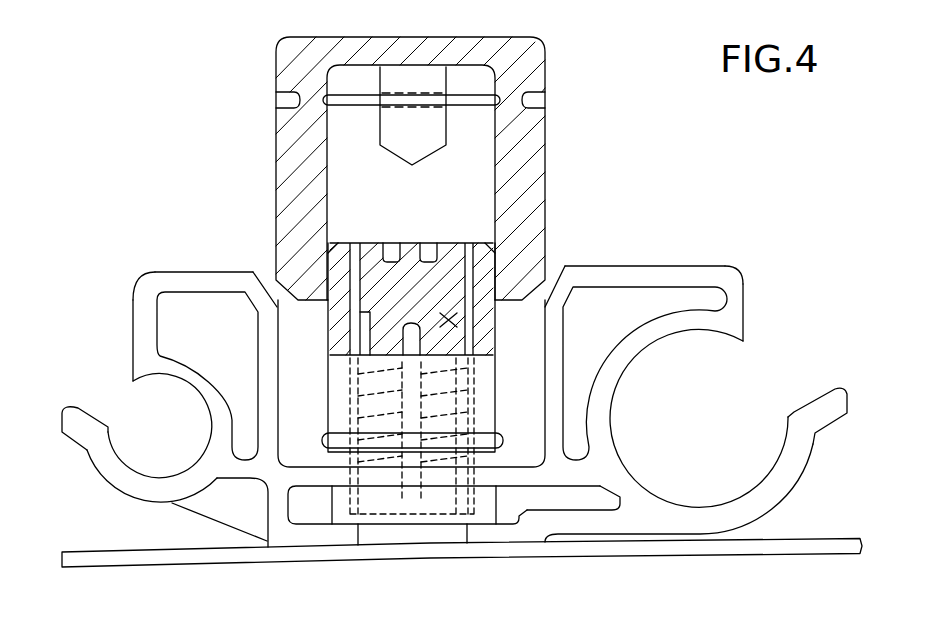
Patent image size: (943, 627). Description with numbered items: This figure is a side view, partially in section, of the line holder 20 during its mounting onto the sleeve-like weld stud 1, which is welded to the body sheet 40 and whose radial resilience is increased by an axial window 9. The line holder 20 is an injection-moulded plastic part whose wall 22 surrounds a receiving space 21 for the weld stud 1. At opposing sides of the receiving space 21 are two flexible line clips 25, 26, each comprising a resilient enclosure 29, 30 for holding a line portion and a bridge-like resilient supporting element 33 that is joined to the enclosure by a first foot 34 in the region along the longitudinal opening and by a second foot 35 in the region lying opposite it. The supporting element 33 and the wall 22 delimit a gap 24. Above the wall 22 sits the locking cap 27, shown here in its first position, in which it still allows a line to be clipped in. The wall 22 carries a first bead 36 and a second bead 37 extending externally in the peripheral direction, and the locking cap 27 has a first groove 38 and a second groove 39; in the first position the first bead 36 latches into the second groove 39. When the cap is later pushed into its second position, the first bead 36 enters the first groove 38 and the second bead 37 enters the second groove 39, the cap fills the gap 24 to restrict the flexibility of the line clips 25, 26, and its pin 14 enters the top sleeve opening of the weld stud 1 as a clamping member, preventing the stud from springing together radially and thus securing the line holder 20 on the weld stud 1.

The weld stud 1 is at (447, 319).
The axial window 9 is at (512, 345).
The pin 14 is at (415, 125).
The line holder 20 is at (280, 530).
The receiving space 21 is at (415, 236).
The wall 22 is at (483, 518).
The gap 24 is at (290, 337).
The line clip 25 is at (147, 285).
The line clip 26 is at (793, 463).
The locking cap 27 is at (523, 168).
The resilient enclosure 29 is at (108, 467).
The resilient enclosure 30 is at (638, 340).
The resilient supporting element 33 is at (197, 272).
The first foot 34 is at (145, 347).
The second foot 35 is at (247, 477).
The first bead 36 is at (338, 266).
The second bead 37 is at (322, 440).
The first groove 38 is at (500, 102).
The second groove 39 is at (495, 263).
The body sheet 40 is at (88, 560).